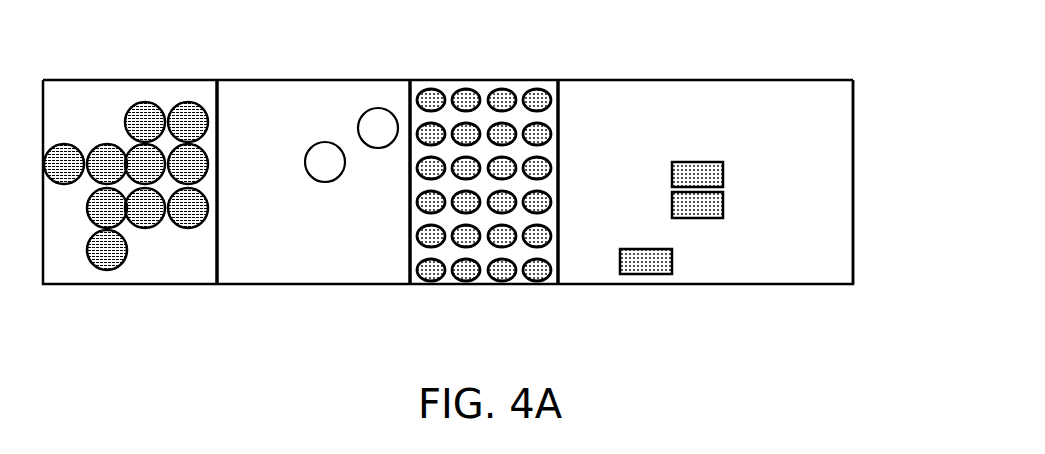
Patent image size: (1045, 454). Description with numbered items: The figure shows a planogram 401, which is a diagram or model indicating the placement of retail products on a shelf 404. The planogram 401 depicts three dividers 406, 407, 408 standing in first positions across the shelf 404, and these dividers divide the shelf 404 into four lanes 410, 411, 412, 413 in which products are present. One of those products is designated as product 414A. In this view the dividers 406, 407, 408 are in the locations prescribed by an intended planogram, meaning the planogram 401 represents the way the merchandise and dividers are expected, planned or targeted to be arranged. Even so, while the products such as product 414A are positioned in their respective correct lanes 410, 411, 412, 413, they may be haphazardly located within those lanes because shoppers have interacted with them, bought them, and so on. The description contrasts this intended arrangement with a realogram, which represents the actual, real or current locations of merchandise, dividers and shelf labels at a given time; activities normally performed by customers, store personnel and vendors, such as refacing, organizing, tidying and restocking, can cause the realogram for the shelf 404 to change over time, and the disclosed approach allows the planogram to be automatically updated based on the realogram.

The planogram 401 is at (842, 38).
The shelf 404 is at (843, 182).
The divider 406 is at (217, 284).
The divider 407 is at (410, 284).
The divider 408 is at (558, 284).
The lane 410 is at (105, 64).
The lane 411 is at (312, 64).
The lane 412 is at (518, 64).
The lane 413 is at (705, 140).
The product 414A is at (698, 162).